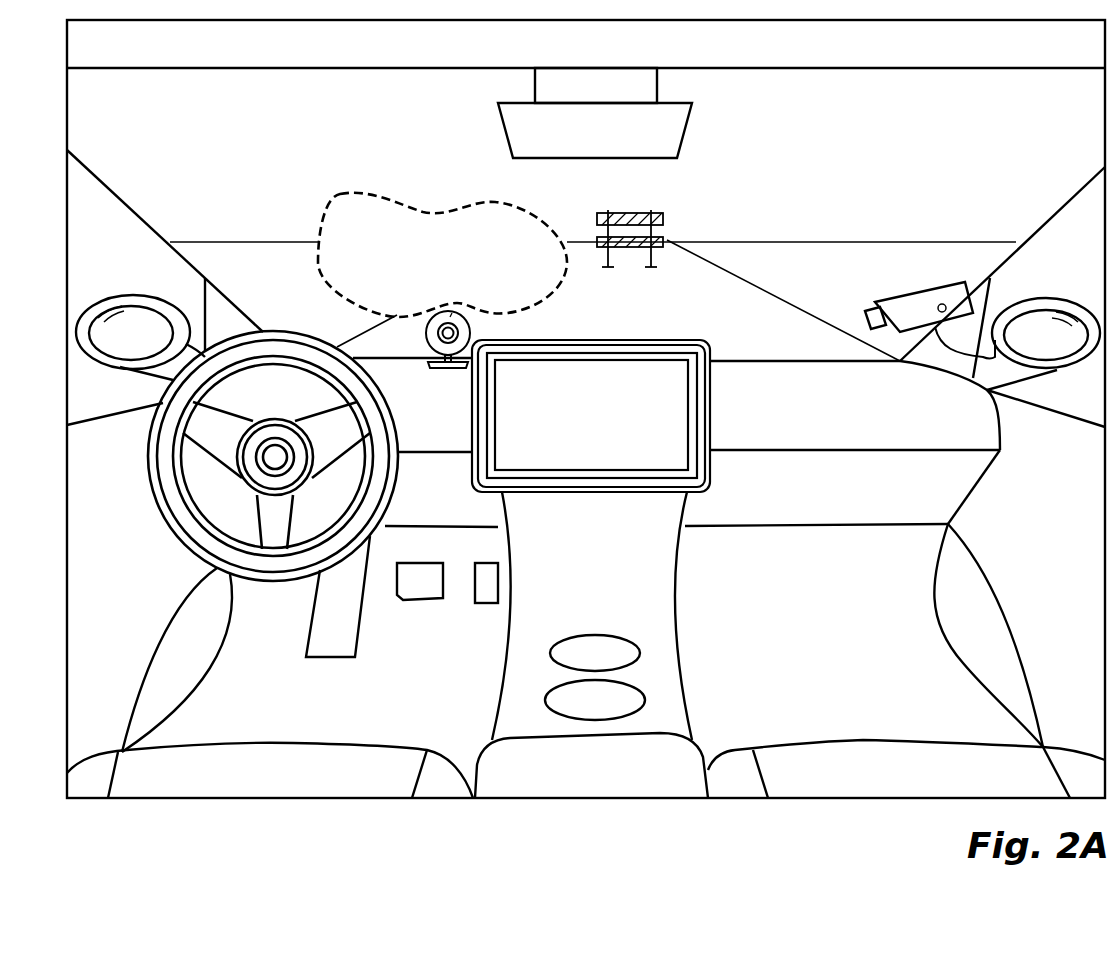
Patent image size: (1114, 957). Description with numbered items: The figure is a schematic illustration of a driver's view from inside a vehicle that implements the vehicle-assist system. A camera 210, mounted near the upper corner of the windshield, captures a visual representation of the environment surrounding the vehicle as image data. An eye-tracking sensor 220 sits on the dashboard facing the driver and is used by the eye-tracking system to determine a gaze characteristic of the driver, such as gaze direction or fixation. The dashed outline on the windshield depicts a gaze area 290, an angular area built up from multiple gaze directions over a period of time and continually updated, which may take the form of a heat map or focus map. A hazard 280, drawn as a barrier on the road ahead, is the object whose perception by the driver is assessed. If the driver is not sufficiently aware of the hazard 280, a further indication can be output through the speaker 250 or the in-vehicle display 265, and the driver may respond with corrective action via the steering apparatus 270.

The camera 210 is at (892, 297).
The eye-tracking sensor 220 is at (445, 370).
The speaker 250 is at (942, 608).
The in-vehicle display 265 is at (611, 438).
The steering apparatus 270 is at (275, 584).
The hazard 280 is at (668, 238).
The gaze area 290 is at (463, 270).